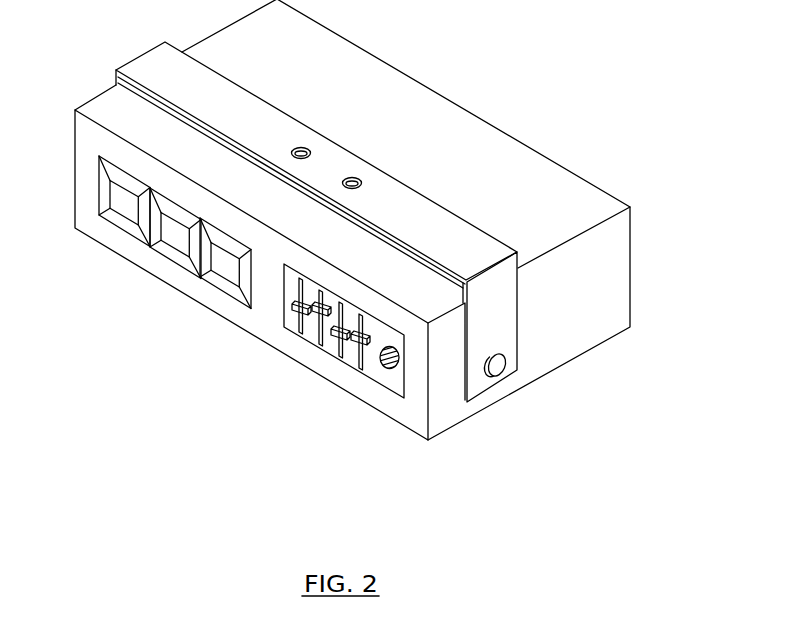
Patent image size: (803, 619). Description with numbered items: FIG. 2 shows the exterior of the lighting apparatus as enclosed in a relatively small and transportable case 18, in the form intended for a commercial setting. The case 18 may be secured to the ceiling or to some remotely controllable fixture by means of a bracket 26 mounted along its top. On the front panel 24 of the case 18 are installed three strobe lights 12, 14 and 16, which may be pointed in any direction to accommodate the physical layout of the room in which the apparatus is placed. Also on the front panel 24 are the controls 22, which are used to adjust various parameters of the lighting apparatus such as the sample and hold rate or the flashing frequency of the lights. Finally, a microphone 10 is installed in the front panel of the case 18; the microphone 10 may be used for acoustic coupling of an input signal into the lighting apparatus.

The microphone 10 is at (387, 371).
The strobe light 12 is at (117, 227).
The strobe light 14 is at (165, 255).
The strobe light 16 is at (222, 283).
The case 18 is at (443, 67).
The controls 22 is at (327, 353).
The front panel 24 is at (417, 416).
The bracket 26 is at (148, 60).